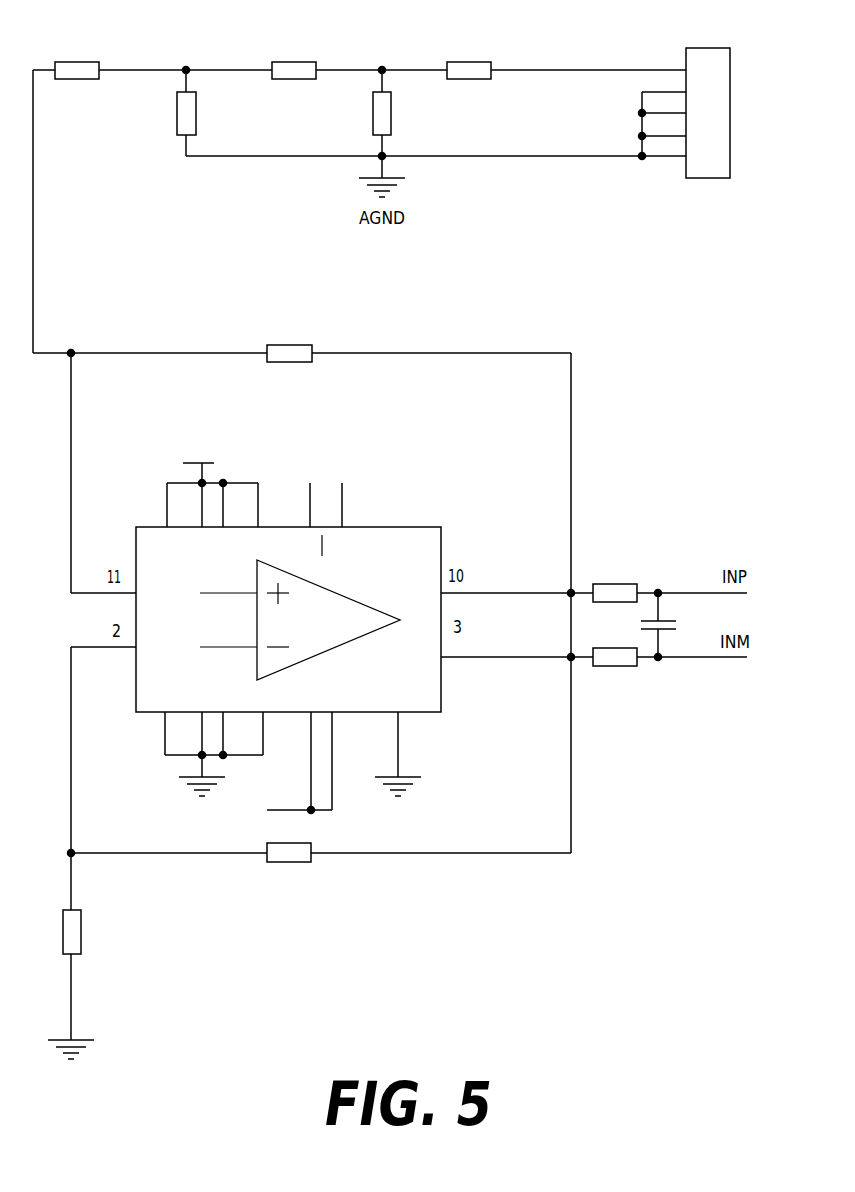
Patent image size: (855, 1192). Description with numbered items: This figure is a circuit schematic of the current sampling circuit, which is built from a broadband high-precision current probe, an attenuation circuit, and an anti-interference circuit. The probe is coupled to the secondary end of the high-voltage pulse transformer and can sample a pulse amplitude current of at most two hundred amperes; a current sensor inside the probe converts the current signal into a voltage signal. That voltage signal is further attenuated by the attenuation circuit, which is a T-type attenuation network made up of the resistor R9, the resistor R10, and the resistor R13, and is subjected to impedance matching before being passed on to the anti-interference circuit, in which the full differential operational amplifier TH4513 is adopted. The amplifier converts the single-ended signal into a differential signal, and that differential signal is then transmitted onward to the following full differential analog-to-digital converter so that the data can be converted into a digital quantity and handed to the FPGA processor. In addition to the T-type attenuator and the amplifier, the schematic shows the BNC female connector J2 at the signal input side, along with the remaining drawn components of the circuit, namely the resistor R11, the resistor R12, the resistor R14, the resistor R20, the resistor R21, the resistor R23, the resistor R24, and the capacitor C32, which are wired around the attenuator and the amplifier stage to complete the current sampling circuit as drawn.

The resistor R11 is at (77, 85).
The resistor R10 is at (294, 85).
The resistor R9 is at (469, 85).
The resistor R14 is at (169, 113).
The resistor R13 is at (364, 113).
The BNC female connector J2 is at (692, 116).
The resistor R12 is at (289, 368).
The full differential operational amplifier TH4513 is at (288, 630).
The resistor R20 is at (615, 605).
The resistor R21 is at (615, 671).
The capacitor C32 is at (676, 625).
The resistor R24 is at (289, 866).
The resistor R23 is at (99, 957).